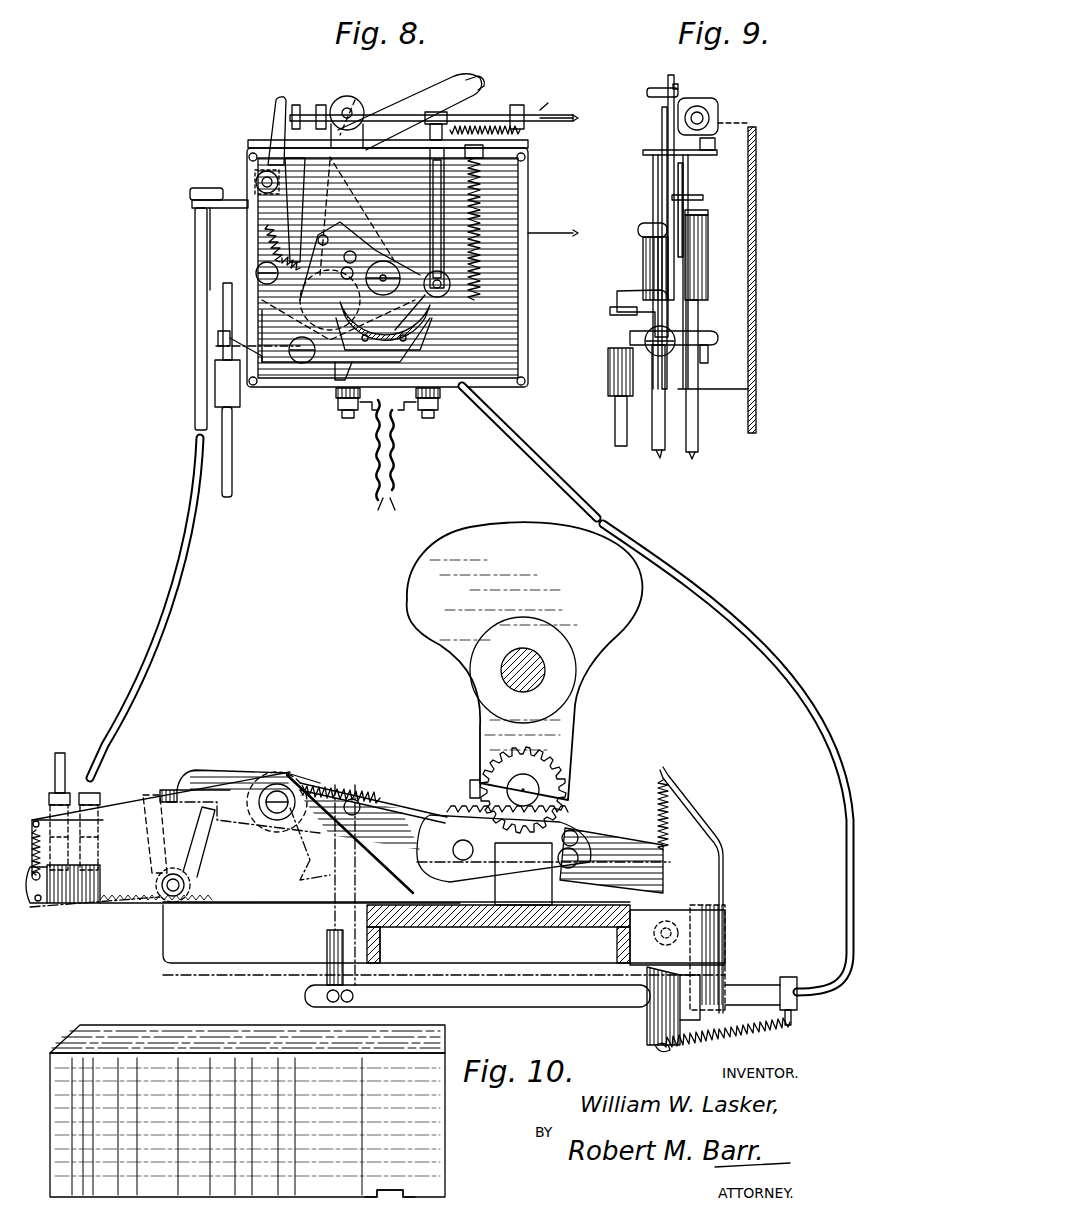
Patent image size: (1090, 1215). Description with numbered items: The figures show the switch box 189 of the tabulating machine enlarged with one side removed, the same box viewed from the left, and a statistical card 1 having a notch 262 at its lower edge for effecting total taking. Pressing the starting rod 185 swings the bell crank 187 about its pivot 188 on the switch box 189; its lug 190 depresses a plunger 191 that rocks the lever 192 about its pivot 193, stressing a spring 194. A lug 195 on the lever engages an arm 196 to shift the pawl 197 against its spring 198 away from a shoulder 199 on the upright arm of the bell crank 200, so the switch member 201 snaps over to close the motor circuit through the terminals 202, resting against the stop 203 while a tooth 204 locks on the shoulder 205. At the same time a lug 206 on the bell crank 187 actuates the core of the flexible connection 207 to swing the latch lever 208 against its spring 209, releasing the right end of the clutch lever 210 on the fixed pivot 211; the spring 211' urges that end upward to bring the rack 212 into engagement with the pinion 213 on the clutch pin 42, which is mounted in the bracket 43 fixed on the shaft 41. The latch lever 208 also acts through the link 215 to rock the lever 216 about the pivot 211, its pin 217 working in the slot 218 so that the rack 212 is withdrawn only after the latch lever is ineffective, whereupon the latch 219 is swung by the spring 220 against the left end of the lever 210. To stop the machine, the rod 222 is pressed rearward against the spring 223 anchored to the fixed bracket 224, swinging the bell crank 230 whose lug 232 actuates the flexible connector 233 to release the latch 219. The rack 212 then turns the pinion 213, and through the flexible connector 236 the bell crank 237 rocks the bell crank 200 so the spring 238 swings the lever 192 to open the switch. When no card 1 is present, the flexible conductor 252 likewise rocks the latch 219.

In FIG. 10, the card 1 is at (448, 1046).
In FIG. 8, the shaft 41 is at (545, 678).
In FIG. 8, the clutch pin 42 is at (535, 788).
In FIG. 8, the bracket 43 is at (570, 752).
In FIG. 8, the rod 185 is at (560, 236).
In FIG. 9, the rod 185 is at (643, 236).
In FIG. 8, the bell crank 187 is at (368, 122).
In FIG. 9, the bell crank 187 is at (662, 210).
In FIG. 8, the pivot 188 is at (346, 110).
In FIG. 8, the switch box 189 is at (522, 353).
In FIG. 8, the lug 190 is at (455, 80).
In FIG. 9, the lug 190 is at (718, 112).
In FIG. 8, the plunger 191 is at (523, 176).
In FIG. 8, the lever 192 is at (450, 312).
In FIG. 8, the pivot 193 is at (369, 241).
In FIG. 8, the spring 194 is at (345, 380).
In FIG. 8, the lug 195 is at (322, 362).
In FIG. 8, the arm 196 is at (250, 292).
In FIG. 8, the pawl 197 is at (262, 240).
In FIG. 8, the spring 198 is at (265, 232).
In FIG. 8, the shoulder 199 is at (300, 262).
In FIG. 8, the bell crank 200 is at (280, 356).
In FIG. 9, the bell crank 200 is at (710, 354).
In FIG. 8, the switch member 201 is at (384, 326).
In FIG. 8, the terminals 202 is at (366, 390).
In FIG. 8, the stop 203 is at (341, 271).
In FIG. 8, the tooth 204 is at (316, 216).
In FIG. 8, the shoulder 205 is at (262, 258).
In FIG. 8, the lug 206 is at (476, 110).
In FIG. 9, the lug 206 is at (650, 99).
In FIG. 8, the flexible connection 207 is at (690, 592).
In FIG. 9, the flexible connection 207 is at (658, 458).
In FIG. 8, the latch lever 208 is at (700, 870).
In FIG. 8, the spring 209 is at (760, 1035).
In FIG. 8, the clutch lever 210 is at (596, 842).
In FIG. 8, the pivot 211 is at (246, 816).
In FIG. 8, the spring 211' is at (706, 890).
In FIG. 8, the rack 212 is at (484, 875).
In FIG. 8, the pinion 213 is at (566, 806).
In FIG. 8, the link 215 is at (605, 1008).
In FIG. 8, the lever 216 is at (327, 978).
In FIG. 8, the pin 217 is at (370, 790).
In FIG. 8, the slot 218 is at (386, 802).
In FIG. 8, the latch 219 is at (197, 838).
In FIG. 8, the spring 220 is at (38, 906).
In FIG. 8, the rod 222 is at (558, 121).
In FIG. 9, the rod 222 is at (757, 126).
In FIG. 8, the spring 223 is at (472, 130).
In FIG. 8, the fixed bracket 224 is at (564, 98).
In FIG. 8, the bell crank 230 is at (274, 108).
In FIG. 9, the bell crank 230 is at (678, 168).
In FIG. 8, the lug 232 is at (258, 176).
In FIG. 8, the flexible connector 233 is at (192, 500).
In FIG. 9, the flexible connector 233 is at (698, 436).
In FIG. 8, the flexible connector 236 is at (232, 482).
In FIG. 9, the flexible connector 236 is at (614, 440).
In FIG. 8, the bell crank 237 is at (216, 348).
In FIG. 9, the bell crank 237 is at (700, 336).
In FIG. 8, the spring 238 is at (530, 210).
In FIG. 8, the flexible conductor 252 is at (63, 752).
In FIG. 10, the notch 262 is at (450, 1195).